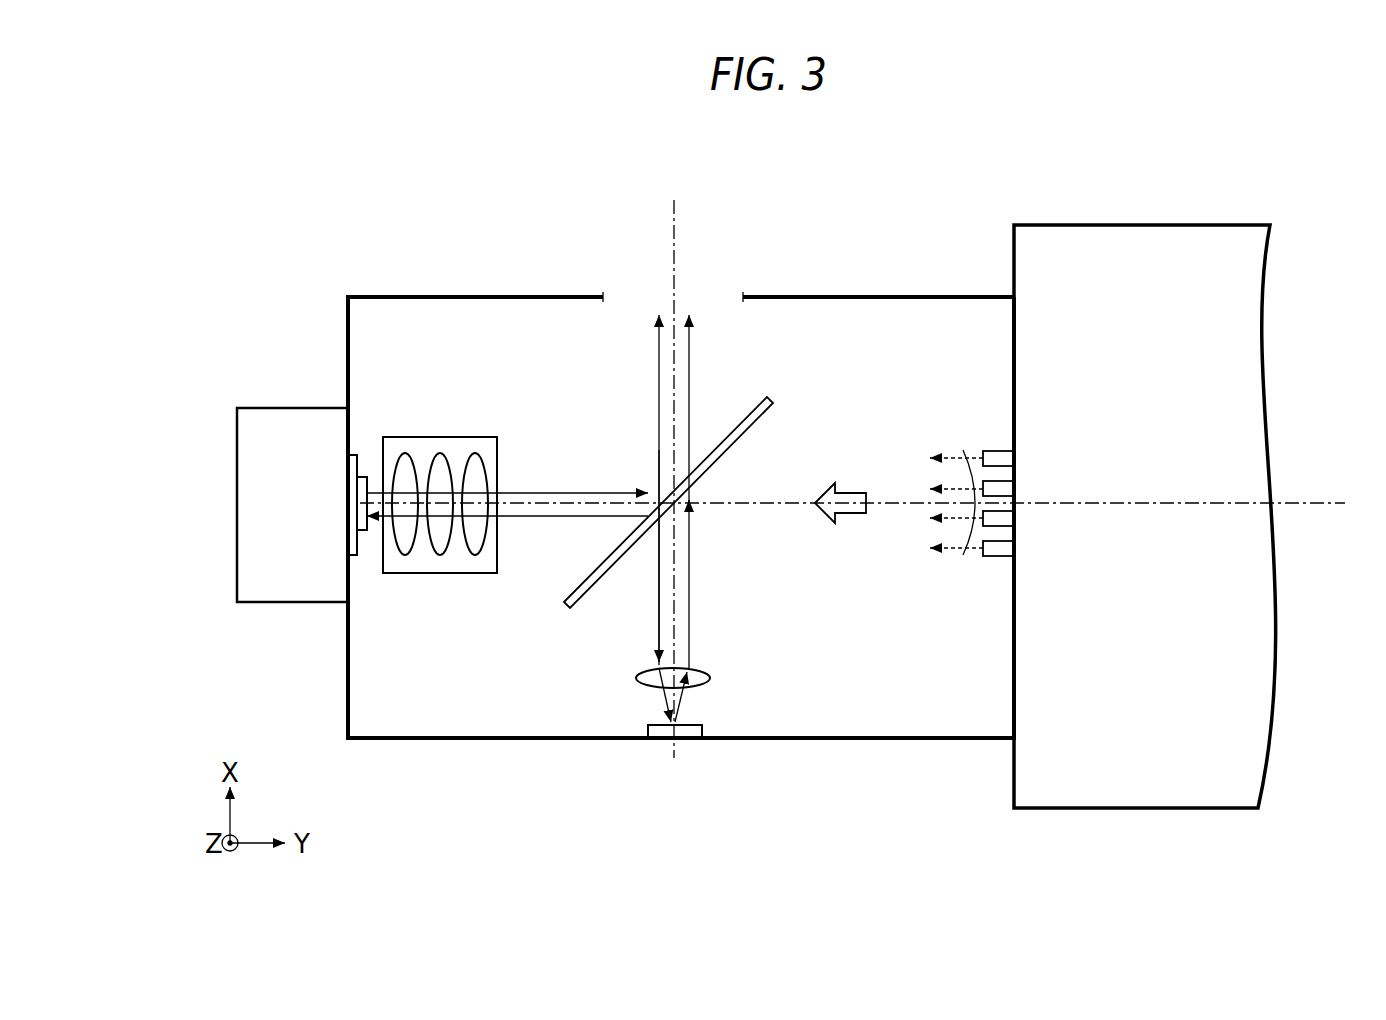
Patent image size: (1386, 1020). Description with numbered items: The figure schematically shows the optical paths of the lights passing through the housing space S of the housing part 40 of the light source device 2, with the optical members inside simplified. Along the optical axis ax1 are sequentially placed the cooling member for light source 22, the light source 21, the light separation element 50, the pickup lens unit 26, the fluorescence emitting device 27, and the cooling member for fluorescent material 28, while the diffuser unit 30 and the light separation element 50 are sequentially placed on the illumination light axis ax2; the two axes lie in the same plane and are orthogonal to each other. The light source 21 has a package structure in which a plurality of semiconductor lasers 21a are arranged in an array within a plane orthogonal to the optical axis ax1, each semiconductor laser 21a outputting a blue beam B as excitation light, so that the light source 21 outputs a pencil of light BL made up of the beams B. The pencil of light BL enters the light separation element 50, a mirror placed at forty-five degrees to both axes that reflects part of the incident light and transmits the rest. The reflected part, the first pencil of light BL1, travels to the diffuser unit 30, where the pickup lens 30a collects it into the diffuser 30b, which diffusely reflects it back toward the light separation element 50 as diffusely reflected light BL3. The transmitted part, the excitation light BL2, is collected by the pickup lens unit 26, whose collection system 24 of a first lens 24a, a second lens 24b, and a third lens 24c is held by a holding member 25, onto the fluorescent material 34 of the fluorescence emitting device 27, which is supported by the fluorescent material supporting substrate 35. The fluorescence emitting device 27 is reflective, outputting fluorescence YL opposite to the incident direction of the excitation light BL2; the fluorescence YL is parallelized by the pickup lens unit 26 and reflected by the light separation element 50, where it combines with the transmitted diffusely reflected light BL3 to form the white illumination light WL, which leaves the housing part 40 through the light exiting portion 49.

The light source device 2 is at (1050, 190).
The light source 21 is at (992, 486).
The semiconductor laser 21a is at (992, 548).
The cooling member for light source 22 is at (1080, 810).
The collection system 24 is at (512, 648).
The first lens 24a is at (478, 556).
The second lens 24b is at (440, 556).
The third lens 24c is at (405, 556).
The holding member 25 is at (490, 573).
The pickup lens unit 26 is at (550, 692).
The fluorescence emitting device 27 is at (335, 680).
The cooling member for fluorescent material 28 is at (237, 492).
The diffuser unit 30 is at (315, 370).
The pickup lens 30a is at (710, 675).
The diffuser 30b is at (702, 730).
The fluorescent material 34 is at (367, 528).
The fluorescent material supporting substrate 35 is at (353, 523).
The housing part 40 is at (935, 740).
The light exiting portion 49 is at (743, 296).
The light separation element 50 is at (733, 440).
The housing space S is at (913, 335).
The blue beam B is at (933, 458).
The pencil of light BL is at (848, 487).
The first pencil of light BL1 is at (657, 645).
The excitation light BL2 is at (535, 517).
The diffusely reflected light BL3 is at (690, 590).
The fluorescence YL is at (548, 488).
The illumination light WL is at (505, 213).
The optical axis ax1 is at (1320, 500).
The illumination light axis ax2 is at (680, 237).